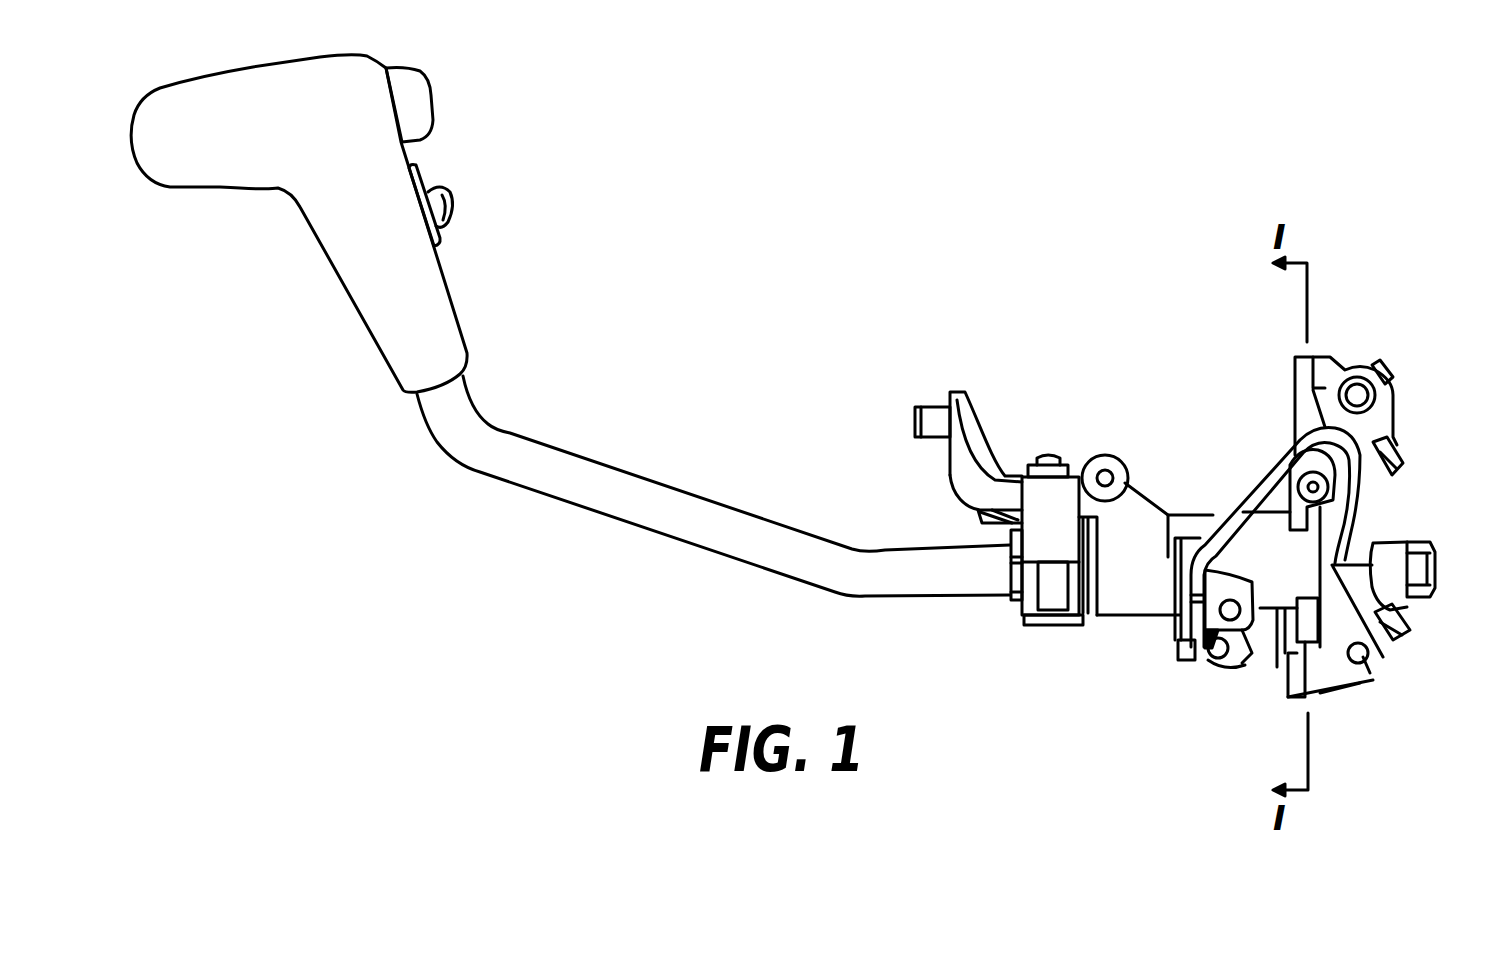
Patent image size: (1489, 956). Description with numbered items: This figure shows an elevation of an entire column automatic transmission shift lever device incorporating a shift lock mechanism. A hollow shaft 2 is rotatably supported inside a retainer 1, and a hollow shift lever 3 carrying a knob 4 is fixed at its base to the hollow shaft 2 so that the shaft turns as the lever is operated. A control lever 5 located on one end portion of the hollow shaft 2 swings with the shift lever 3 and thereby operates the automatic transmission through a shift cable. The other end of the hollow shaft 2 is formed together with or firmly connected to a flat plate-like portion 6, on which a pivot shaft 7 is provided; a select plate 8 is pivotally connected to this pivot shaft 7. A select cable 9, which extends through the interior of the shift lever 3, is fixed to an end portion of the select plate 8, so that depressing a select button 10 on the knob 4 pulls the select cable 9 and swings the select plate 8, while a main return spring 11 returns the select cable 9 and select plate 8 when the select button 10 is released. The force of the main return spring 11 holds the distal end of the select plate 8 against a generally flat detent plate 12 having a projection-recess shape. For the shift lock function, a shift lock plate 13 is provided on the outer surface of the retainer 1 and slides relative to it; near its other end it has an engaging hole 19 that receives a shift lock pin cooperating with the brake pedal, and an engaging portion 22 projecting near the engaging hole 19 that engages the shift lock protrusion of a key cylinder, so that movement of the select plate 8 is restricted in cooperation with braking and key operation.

The retainer 1 is at (1133, 593).
The hollow shaft 2 is at (1015, 567).
The shift lever 3 is at (607, 497).
The knob 4 is at (427, 295).
The control lever 5 is at (960, 392).
The flat plate-like portion 6 is at (1340, 670).
The pivot shaft 7 is at (1368, 677).
The select plate 8 is at (1392, 643).
The select cable 9 is at (1345, 560).
The select button 10 is at (412, 98).
The main return spring 11 is at (1408, 623).
The detent plate 12 is at (1290, 635).
The shift lock plate 13 is at (1380, 381).
The engaging hole 19 is at (1358, 392).
The engaging portion 22 is at (1403, 455).